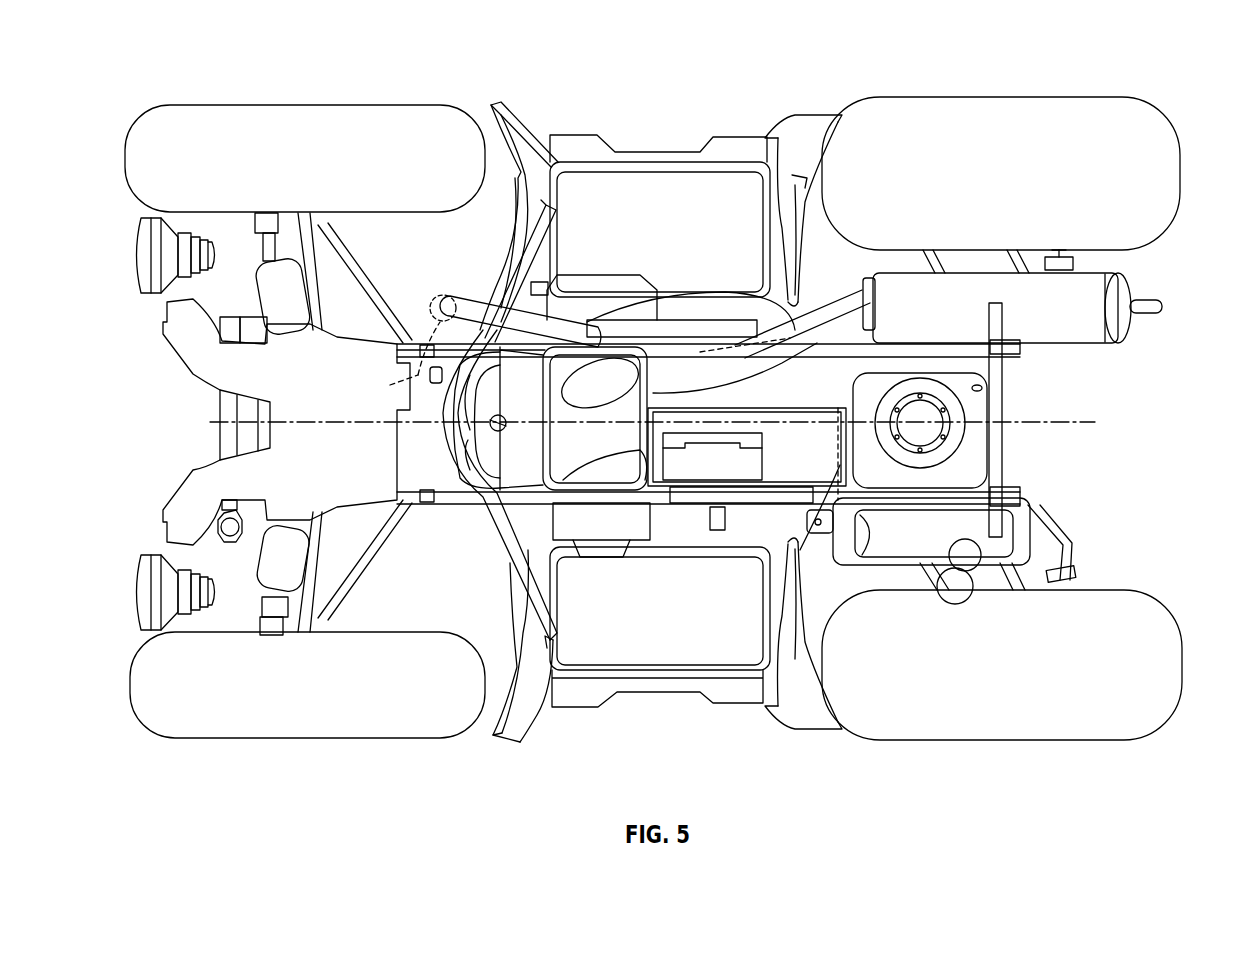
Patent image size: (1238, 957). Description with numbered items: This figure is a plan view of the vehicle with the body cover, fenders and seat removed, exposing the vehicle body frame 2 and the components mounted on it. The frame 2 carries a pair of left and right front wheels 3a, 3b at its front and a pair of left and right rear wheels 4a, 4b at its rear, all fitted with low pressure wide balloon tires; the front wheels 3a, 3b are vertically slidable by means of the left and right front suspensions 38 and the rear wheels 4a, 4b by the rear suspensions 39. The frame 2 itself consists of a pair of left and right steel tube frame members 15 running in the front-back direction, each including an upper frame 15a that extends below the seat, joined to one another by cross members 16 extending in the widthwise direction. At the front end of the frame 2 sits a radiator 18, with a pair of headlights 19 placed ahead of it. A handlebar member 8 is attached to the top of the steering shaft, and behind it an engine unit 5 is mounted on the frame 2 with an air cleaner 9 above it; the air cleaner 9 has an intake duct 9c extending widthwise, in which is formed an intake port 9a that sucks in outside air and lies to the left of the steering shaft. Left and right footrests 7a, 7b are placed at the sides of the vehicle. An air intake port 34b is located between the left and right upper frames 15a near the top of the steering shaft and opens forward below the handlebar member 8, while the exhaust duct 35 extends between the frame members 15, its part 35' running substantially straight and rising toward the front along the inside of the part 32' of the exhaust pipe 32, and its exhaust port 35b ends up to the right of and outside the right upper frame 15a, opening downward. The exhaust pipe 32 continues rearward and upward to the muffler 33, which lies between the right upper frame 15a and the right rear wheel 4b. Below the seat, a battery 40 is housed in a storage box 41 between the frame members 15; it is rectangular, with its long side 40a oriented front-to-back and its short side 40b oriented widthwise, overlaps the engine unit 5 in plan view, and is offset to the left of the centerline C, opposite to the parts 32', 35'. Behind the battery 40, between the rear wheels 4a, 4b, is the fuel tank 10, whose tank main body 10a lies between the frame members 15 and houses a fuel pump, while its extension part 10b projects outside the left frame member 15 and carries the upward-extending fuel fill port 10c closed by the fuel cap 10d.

The vehicle body frame 2 is at (460, 340).
The left front wheel 3a is at (371, 740).
The right front wheel 3b is at (363, 106).
The left rear wheel 4a is at (1081, 741).
The right rear wheel 4b is at (1074, 103).
The engine unit 5 is at (657, 283).
The left footrest 7a is at (672, 660).
The right footrest 7b is at (672, 185).
The handlebar member 8 is at (528, 232).
The air cleaner 9 is at (523, 500).
The intake port 9a is at (540, 483).
The intake duct 9c is at (490, 452).
The fuel tank 10 is at (900, 574).
The tank main body 10a is at (975, 456).
The extension part 10b is at (856, 567).
The fuel fill port 10c is at (1000, 567).
The fuel cap 10d is at (967, 575).
The frame member 15 is at (403, 336).
The upper frame 15a is at (432, 345).
The cross member 16 is at (1003, 386).
The radiator 18 is at (215, 422).
The headlight 19 is at (190, 235).
The exhaust pipe 32 is at (802, 292).
The part of exhaust pipe 32' is at (672, 303).
The muffler 33 is at (1085, 345).
The air intake port 34b is at (428, 378).
The exhaust duct 35 is at (514, 285).
The part of exhaust duct 35' is at (702, 317).
The exhaust port 35b is at (394, 363).
The front suspension 38 is at (347, 252).
The rear suspension 39 is at (1083, 262).
The battery 40 is at (768, 462).
The long side 40a is at (707, 485).
The short side 40b is at (762, 441).
The storage box 41 is at (855, 470).
The centerline C is at (1075, 424).